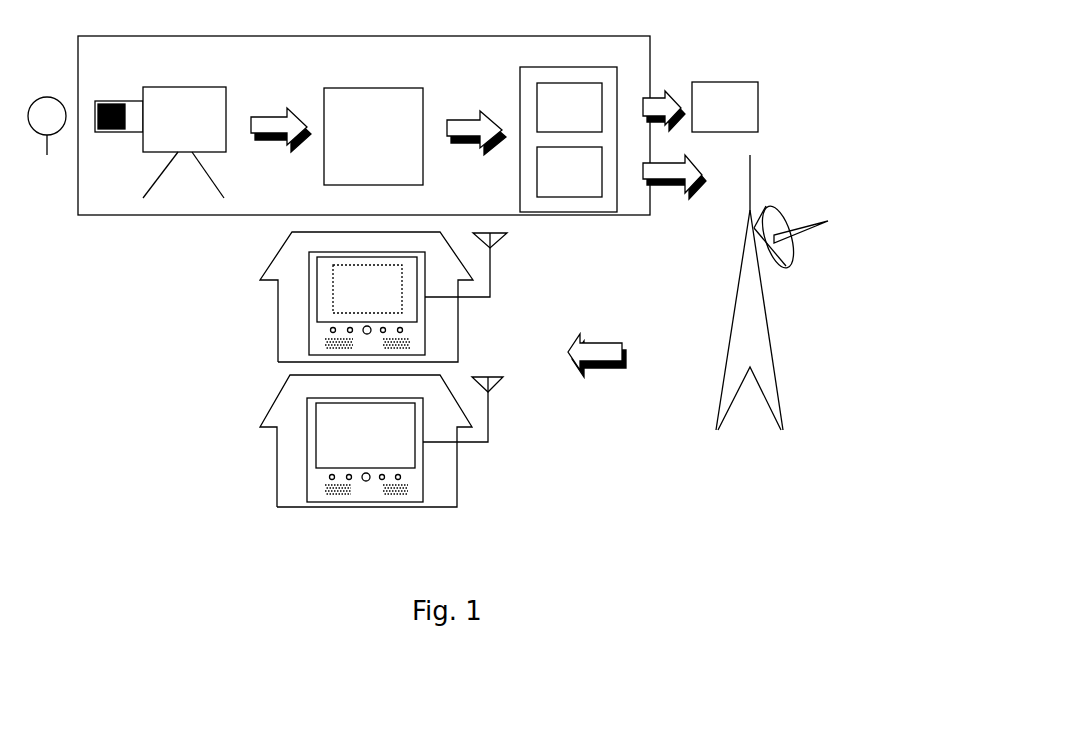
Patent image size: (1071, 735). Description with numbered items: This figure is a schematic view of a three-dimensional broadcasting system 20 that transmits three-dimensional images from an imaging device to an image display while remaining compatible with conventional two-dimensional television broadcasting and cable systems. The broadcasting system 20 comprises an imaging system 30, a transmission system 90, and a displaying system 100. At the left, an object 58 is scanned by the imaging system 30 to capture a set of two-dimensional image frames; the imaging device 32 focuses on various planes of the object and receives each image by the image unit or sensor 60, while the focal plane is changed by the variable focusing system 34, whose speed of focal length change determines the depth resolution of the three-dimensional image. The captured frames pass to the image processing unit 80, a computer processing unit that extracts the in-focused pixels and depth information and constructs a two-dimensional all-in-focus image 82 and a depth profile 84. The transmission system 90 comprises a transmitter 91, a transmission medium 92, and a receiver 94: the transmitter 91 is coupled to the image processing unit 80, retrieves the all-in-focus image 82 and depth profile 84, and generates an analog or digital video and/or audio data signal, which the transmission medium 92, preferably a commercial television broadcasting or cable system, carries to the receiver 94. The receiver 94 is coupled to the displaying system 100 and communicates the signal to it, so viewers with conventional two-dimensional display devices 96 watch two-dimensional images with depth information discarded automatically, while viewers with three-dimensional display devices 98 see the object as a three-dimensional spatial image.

The three-dimensional broadcasting system 20 is at (166, 359).
The imaging system 30 is at (165, 215).
The imaging device 32 is at (183, 127).
The variable focusing system 34 is at (109, 101).
The subject 58 is at (47, 140).
The image unit or sensor 60 is at (208, 87).
The image processing unit 80 is at (408, 88).
The all-in-focus image 82 is at (603, 105).
The depth profile 84 is at (602, 197).
The transmission system 90 is at (700, 253).
The transmitter 91 is at (758, 105).
The transmission medium 92 is at (752, 215).
The receiver 94 is at (503, 235).
The two-dimensional display device 96 is at (308, 280).
The three-dimensional display device 98 is at (307, 427).
The displaying system 100 is at (483, 357).